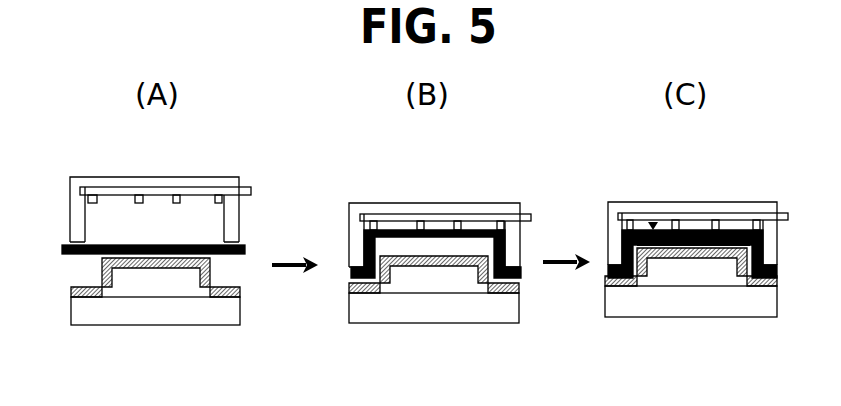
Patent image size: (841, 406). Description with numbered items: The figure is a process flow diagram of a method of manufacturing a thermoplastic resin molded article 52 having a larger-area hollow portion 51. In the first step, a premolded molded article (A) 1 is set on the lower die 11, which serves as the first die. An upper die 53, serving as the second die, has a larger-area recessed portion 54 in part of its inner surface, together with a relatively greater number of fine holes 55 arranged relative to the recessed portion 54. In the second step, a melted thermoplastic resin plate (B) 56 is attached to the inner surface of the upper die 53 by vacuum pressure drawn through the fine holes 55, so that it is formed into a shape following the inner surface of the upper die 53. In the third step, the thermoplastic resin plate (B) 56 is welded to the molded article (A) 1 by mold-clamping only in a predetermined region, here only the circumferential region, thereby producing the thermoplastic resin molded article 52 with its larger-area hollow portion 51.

The molded article (A) 1 is at (101, 271).
The lower die 11 is at (155, 312).
The hollow portion 51 is at (725, 243).
The thermoplastic resin molded article 52 is at (653, 226).
The upper die 53 is at (201, 180).
The recessed portion 54 is at (106, 212).
The fine hole 55 is at (136, 199).
The thermoplastic resin plate (B) 56 is at (188, 243).